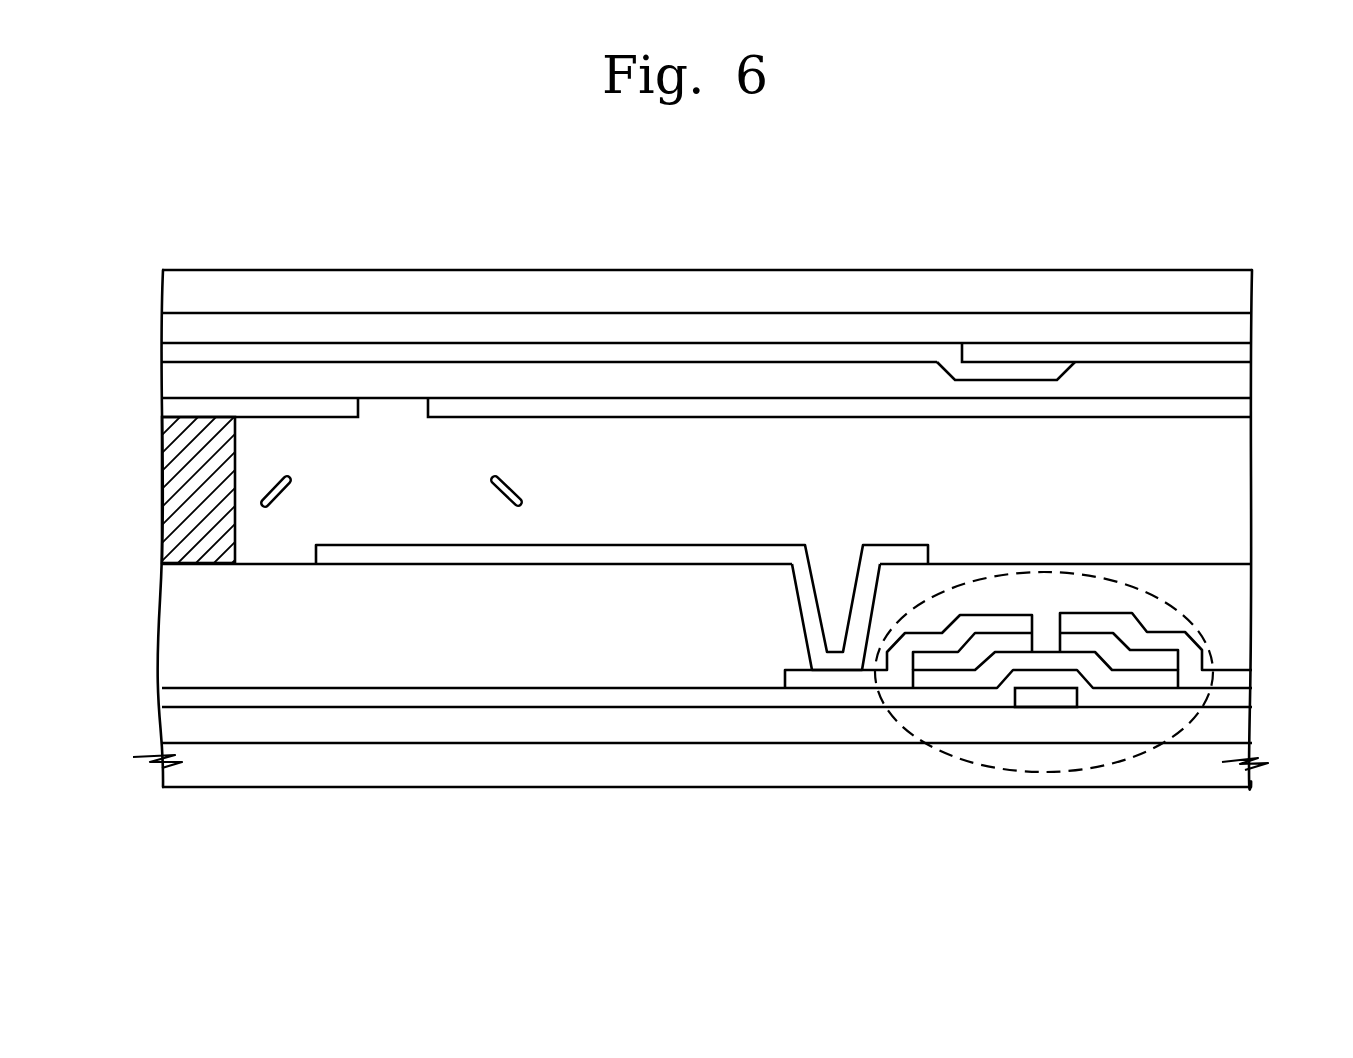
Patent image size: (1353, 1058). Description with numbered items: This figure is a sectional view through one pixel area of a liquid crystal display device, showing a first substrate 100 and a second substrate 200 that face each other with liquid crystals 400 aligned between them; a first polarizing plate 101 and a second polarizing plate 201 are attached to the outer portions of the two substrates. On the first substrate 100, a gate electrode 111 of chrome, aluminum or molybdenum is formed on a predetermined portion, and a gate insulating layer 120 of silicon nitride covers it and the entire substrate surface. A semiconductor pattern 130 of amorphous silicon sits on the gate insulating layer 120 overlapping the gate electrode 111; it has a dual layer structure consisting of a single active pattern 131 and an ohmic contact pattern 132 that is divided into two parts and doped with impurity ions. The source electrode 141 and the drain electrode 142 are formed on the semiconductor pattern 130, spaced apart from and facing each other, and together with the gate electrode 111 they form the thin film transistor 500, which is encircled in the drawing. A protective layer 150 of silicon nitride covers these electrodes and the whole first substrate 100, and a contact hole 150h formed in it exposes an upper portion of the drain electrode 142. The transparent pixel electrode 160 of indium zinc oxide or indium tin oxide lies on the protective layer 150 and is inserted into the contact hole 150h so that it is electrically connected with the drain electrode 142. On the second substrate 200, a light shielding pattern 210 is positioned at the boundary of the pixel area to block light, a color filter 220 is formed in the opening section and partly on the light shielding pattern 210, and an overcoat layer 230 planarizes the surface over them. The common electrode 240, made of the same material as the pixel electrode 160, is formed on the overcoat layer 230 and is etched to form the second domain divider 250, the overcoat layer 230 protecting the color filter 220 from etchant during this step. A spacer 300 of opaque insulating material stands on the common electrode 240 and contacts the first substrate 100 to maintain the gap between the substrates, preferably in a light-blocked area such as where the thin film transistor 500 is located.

The first substrate 100 is at (1233, 735).
The first polarizing plate 101 is at (1262, 774).
The gate electrode 111 is at (1047, 700).
The gate insulating layer 120 is at (1233, 705).
The semiconductor pattern 130 is at (903, 866).
The active pattern 131 is at (932, 682).
The ohmic contact pattern 132 is at (970, 660).
The source electrode 141 is at (1233, 683).
The drain electrode 142 is at (828, 683).
The protective layer 150 is at (165, 628).
The contact hole 150h is at (802, 615).
The pixel electrode 160 is at (697, 548).
The second substrate 200 is at (1233, 327).
The second polarizing plate 201 is at (1233, 293).
The light shielding pattern 210 is at (1233, 350).
The color filter 220 is at (165, 348).
The overcoat layer 230 is at (1233, 378).
The common electrode 240 is at (1233, 407).
The second domain divider 250 is at (382, 416).
The spacer 300 is at (165, 478).
The liquid crystals 400 is at (292, 482).
The thin film transistor 500 is at (1098, 772).